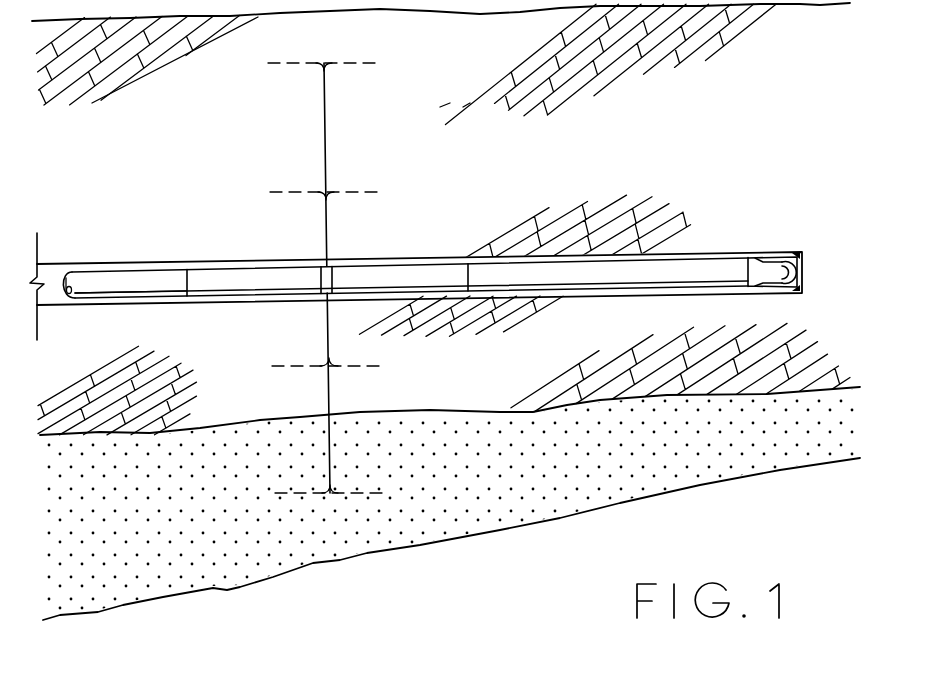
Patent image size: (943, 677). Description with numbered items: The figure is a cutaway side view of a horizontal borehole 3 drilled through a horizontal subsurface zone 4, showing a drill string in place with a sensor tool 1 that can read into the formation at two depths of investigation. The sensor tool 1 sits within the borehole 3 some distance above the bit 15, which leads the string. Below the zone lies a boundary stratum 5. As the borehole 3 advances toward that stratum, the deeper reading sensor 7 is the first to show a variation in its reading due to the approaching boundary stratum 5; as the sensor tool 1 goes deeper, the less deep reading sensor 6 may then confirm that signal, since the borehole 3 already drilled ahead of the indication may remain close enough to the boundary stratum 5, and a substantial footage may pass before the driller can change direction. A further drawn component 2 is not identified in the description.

The sensor tool 1 is at (280, 279).
The tubing 2 is at (137, 279).
The borehole 3 is at (55, 279).
The horizontal subsurface zone 4 is at (608, 122).
The boundary stratum 5 is at (565, 463).
The less deep reading sensor 6 is at (352, 232).
The deeper reading sensor 7 is at (343, 118).
The bit 15 is at (782, 271).